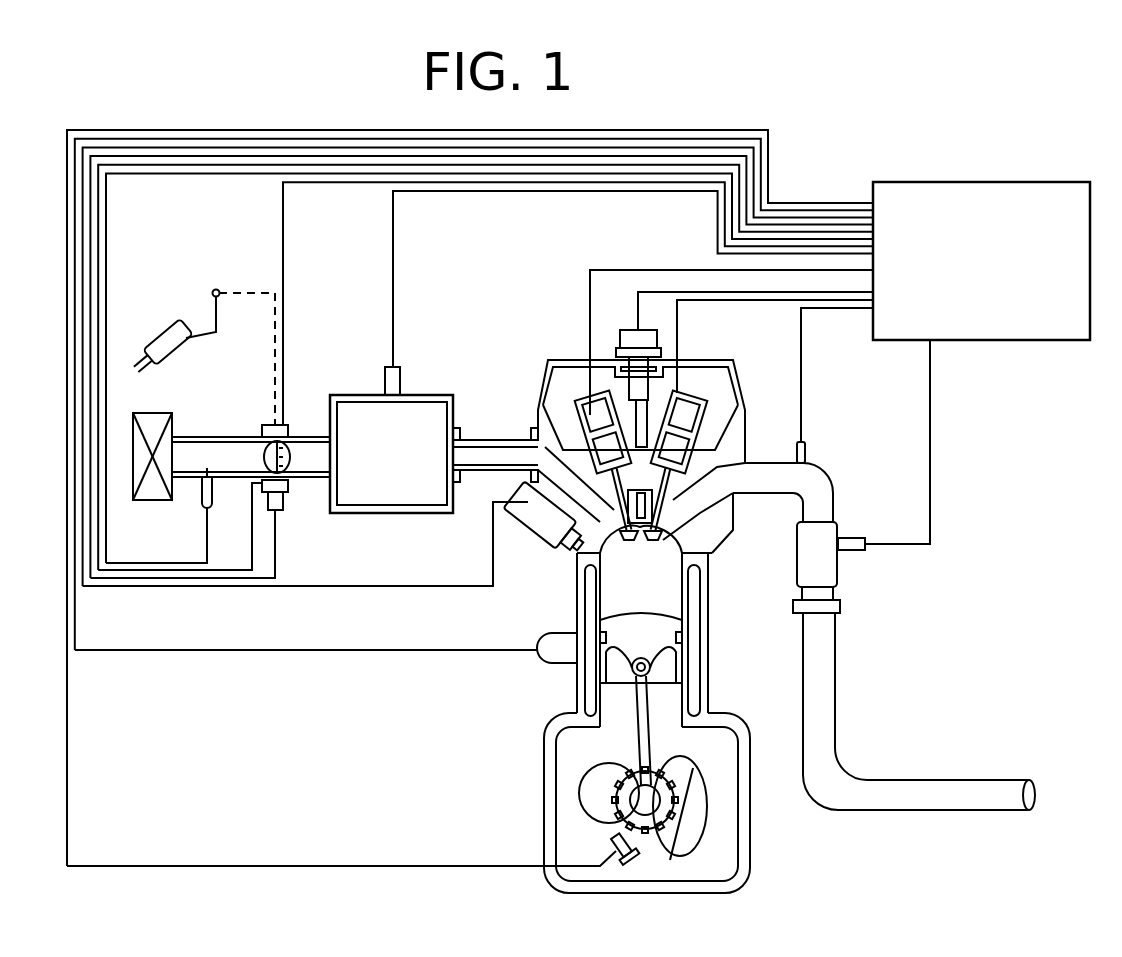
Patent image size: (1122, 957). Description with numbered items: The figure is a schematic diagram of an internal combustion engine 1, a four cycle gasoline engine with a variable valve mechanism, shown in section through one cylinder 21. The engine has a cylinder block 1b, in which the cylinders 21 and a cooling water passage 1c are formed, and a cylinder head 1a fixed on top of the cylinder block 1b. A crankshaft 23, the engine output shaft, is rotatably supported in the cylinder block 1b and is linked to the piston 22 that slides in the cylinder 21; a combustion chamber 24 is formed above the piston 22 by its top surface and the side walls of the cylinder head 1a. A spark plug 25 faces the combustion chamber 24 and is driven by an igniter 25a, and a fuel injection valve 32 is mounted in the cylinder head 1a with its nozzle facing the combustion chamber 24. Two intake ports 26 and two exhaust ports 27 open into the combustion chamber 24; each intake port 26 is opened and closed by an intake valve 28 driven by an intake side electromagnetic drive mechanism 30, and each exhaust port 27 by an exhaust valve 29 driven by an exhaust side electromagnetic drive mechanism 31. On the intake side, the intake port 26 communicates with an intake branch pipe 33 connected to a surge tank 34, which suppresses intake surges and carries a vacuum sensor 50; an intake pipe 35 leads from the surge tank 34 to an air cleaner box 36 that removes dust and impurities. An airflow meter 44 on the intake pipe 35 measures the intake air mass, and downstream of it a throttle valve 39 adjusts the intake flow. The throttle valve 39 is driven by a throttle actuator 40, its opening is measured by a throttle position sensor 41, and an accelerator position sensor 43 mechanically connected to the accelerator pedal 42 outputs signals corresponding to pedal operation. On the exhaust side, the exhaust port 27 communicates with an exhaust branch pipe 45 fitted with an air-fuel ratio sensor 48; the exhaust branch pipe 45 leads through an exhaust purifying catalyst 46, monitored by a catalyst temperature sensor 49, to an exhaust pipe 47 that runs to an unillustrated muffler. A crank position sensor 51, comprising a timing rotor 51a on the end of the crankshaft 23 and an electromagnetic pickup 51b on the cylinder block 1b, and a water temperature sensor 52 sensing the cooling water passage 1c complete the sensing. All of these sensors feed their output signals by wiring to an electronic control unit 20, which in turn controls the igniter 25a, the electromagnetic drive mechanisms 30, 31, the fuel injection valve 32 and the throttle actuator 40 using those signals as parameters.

The internal combustion engine 1 is at (518, 750).
The cylinder head 1a is at (735, 420).
The cylinder block 1b is at (708, 660).
The cooling water passage 1c is at (585, 695).
The electronic control unit 20 is at (960, 182).
The cylinder 21 is at (690, 705).
The piston 22 is at (665, 670).
The crankshaft 23 is at (660, 780).
The combustion chamber 24 is at (640, 612).
The spark plug 25 is at (705, 600).
The igniter 25a is at (657, 340).
The intake port 26 is at (590, 512).
The exhaust port 27 is at (728, 458).
The intake valve 28 is at (603, 597).
The exhaust valve 29 is at (708, 563).
The intake side electromagnetic drive mechanism 30 is at (597, 417).
The exhaust side electromagnetic drive mechanism 31 is at (678, 417).
The fuel injection valve 32 is at (530, 528).
The intake branch pipe 33 is at (497, 440).
The surge tank 34 is at (405, 507).
The intake pipe 35 is at (225, 478).
The air cleaner box 36 is at (165, 501).
The throttle valve 39 is at (290, 463).
The throttle actuator 40 is at (290, 488).
The throttle position sensor 41 is at (283, 510).
The accelerator pedal 42 is at (185, 352).
The accelerator position sensor 43 is at (288, 425).
The airflow meter 44 is at (200, 504).
The exhaust branch pipe 45 is at (828, 478).
The exhaust purifying catalyst 46 is at (838, 562).
The exhaust pipe 47 is at (836, 695).
The air-fuel ratio sensor 48 is at (808, 452).
The catalyst temperature sensor 49 is at (866, 550).
The vacuum sensor 50 is at (400, 375).
The crank position sensor 51 is at (836, 782).
The timing rotor 51a is at (680, 812).
The electromagnetic pickup 51b is at (647, 848).
The water temperature sensor 52 is at (540, 663).